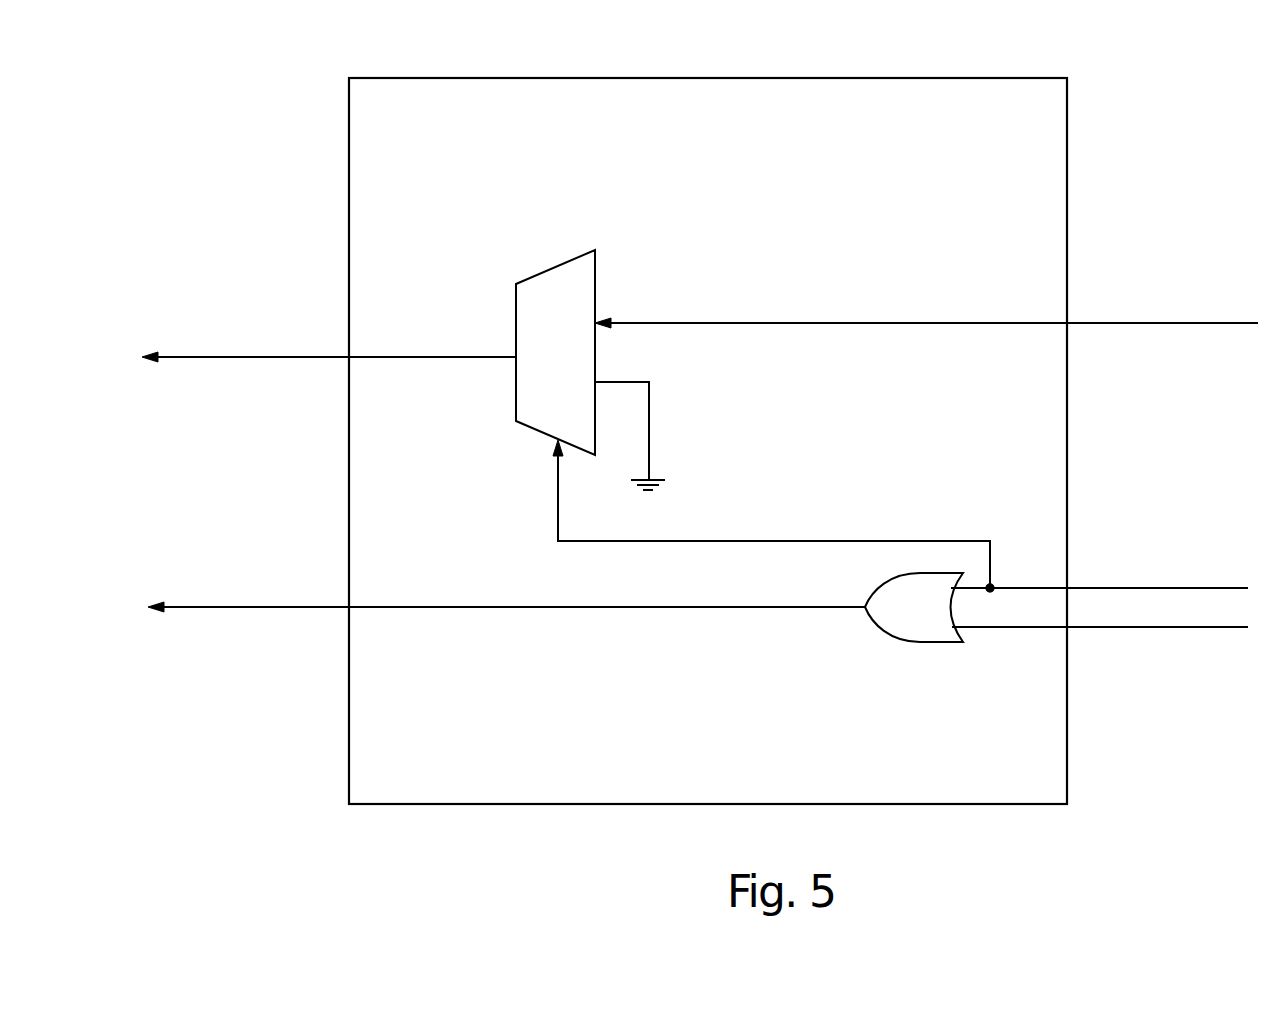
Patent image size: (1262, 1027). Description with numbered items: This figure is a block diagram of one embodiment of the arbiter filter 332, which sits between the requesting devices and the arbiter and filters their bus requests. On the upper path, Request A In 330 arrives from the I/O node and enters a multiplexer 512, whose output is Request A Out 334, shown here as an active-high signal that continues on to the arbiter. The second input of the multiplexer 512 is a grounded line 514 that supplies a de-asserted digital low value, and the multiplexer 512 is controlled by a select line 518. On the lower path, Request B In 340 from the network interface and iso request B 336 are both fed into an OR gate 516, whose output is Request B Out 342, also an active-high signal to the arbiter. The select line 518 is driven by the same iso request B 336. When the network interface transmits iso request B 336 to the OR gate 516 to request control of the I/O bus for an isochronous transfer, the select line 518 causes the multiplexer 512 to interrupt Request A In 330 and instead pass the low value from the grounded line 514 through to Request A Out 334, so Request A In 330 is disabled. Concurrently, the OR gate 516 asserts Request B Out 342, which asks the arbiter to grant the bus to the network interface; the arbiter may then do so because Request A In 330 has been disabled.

The arbiter filter 332 is at (398, 37).
The multiplexer 512 is at (546, 271).
The grounded line 514 is at (650, 412).
The select line 518 is at (800, 540).
The Request A Out 334 is at (433, 358).
The Request A In 330 is at (985, 323).
The OR gate 516 is at (920, 643).
The Request B Out 342 is at (465, 608).
The iso request B 336 is at (1022, 587).
The Request B In 340 is at (1020, 628).